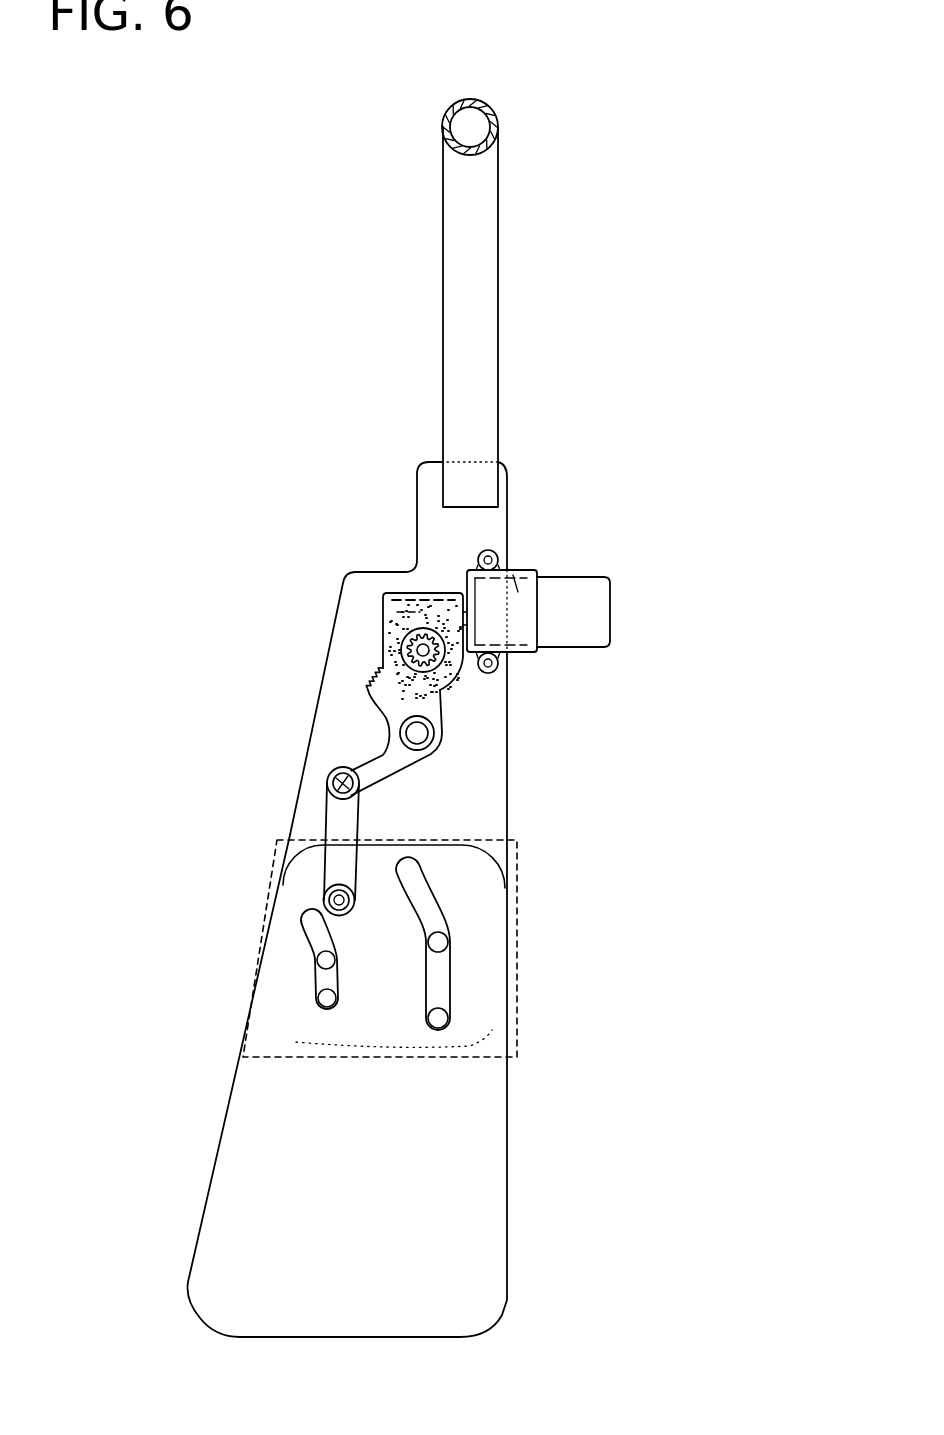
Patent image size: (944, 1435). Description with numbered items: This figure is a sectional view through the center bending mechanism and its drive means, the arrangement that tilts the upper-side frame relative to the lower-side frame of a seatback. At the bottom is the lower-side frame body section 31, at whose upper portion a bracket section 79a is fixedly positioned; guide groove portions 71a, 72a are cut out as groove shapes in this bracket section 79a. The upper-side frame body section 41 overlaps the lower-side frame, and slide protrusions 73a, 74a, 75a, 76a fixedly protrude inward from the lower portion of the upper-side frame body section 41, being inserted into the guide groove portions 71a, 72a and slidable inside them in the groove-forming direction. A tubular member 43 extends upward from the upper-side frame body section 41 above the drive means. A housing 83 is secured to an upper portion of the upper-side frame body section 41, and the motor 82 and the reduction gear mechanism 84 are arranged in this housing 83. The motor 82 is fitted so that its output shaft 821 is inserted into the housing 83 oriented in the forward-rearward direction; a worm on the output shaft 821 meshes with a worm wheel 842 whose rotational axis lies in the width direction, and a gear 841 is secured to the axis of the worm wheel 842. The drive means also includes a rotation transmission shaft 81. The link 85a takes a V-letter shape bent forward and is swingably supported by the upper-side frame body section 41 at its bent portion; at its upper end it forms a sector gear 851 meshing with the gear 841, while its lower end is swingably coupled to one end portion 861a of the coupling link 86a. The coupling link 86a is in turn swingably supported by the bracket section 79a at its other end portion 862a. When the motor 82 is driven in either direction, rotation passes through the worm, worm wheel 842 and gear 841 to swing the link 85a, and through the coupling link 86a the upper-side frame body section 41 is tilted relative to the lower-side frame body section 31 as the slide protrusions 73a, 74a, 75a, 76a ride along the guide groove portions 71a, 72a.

The lower-side frame body section 31 is at (477, 1210).
The upper-side frame body section 41 is at (350, 640).
The shaft 43 is at (473, 292).
The motor 82 is at (590, 612).
The housing 83 is at (520, 568).
The reduction gear mechanism 84 is at (378, 598).
The gear 841 is at (463, 673).
The worm wheel 842 is at (378, 598).
The output shaft 821 is at (433, 590).
The sector gear 851 is at (380, 673).
The rotation transmission shaft 81 is at (435, 732).
The link 85a is at (385, 767).
The coupling link 86a is at (342, 823).
The one end portion of coupling link 861a is at (328, 782).
The other end portion of coupling link 862a is at (324, 898).
The guide groove portion 71a is at (448, 990).
The guide groove portion 72a is at (312, 914).
The slide protrusion 73a is at (442, 943).
The slide protrusion 74a is at (442, 1020).
The slide protrusion 75a is at (325, 960).
The slide protrusion 76a is at (330, 997).
The bracket section 79a is at (518, 897).